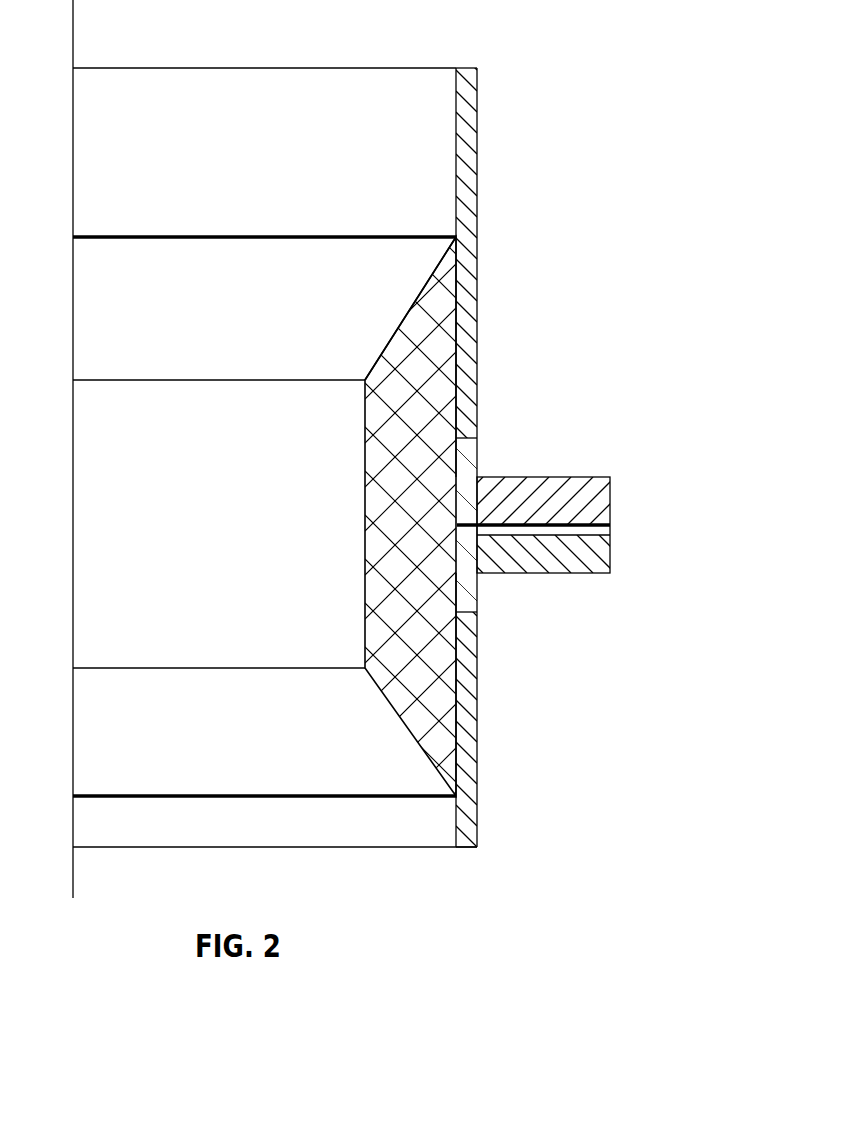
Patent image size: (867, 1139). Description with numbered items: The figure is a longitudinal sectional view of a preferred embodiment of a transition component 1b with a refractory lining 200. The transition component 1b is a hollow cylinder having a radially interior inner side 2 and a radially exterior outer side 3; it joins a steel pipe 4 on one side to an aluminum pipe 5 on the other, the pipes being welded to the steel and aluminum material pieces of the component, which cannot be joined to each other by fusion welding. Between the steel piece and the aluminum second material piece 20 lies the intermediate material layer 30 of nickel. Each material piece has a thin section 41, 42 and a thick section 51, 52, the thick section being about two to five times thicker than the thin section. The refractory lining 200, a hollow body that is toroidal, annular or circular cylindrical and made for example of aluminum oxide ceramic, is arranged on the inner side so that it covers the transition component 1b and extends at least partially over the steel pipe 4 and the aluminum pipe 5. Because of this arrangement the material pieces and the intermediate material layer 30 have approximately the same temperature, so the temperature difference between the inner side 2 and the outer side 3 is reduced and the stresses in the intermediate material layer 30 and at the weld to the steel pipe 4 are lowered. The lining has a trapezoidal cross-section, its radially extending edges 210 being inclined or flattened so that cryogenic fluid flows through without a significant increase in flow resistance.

The transition component 1b is at (678, 410).
The inner side 2 is at (457, 452).
The refractory lining 200 is at (378, 377).
The edges of the refractory lining 210 is at (402, 323).
The outer side 3 is at (475, 445).
The steel pipe 4 is at (462, 712).
The thin section 41 is at (468, 463).
The thin section 42 is at (468, 600).
The aluminum pipe 5 is at (467, 107).
The second material piece 20 is at (585, 483).
The thick section 51 is at (610, 480).
The thick section 52 is at (585, 567).
The intermediate material layer 30 is at (600, 525).